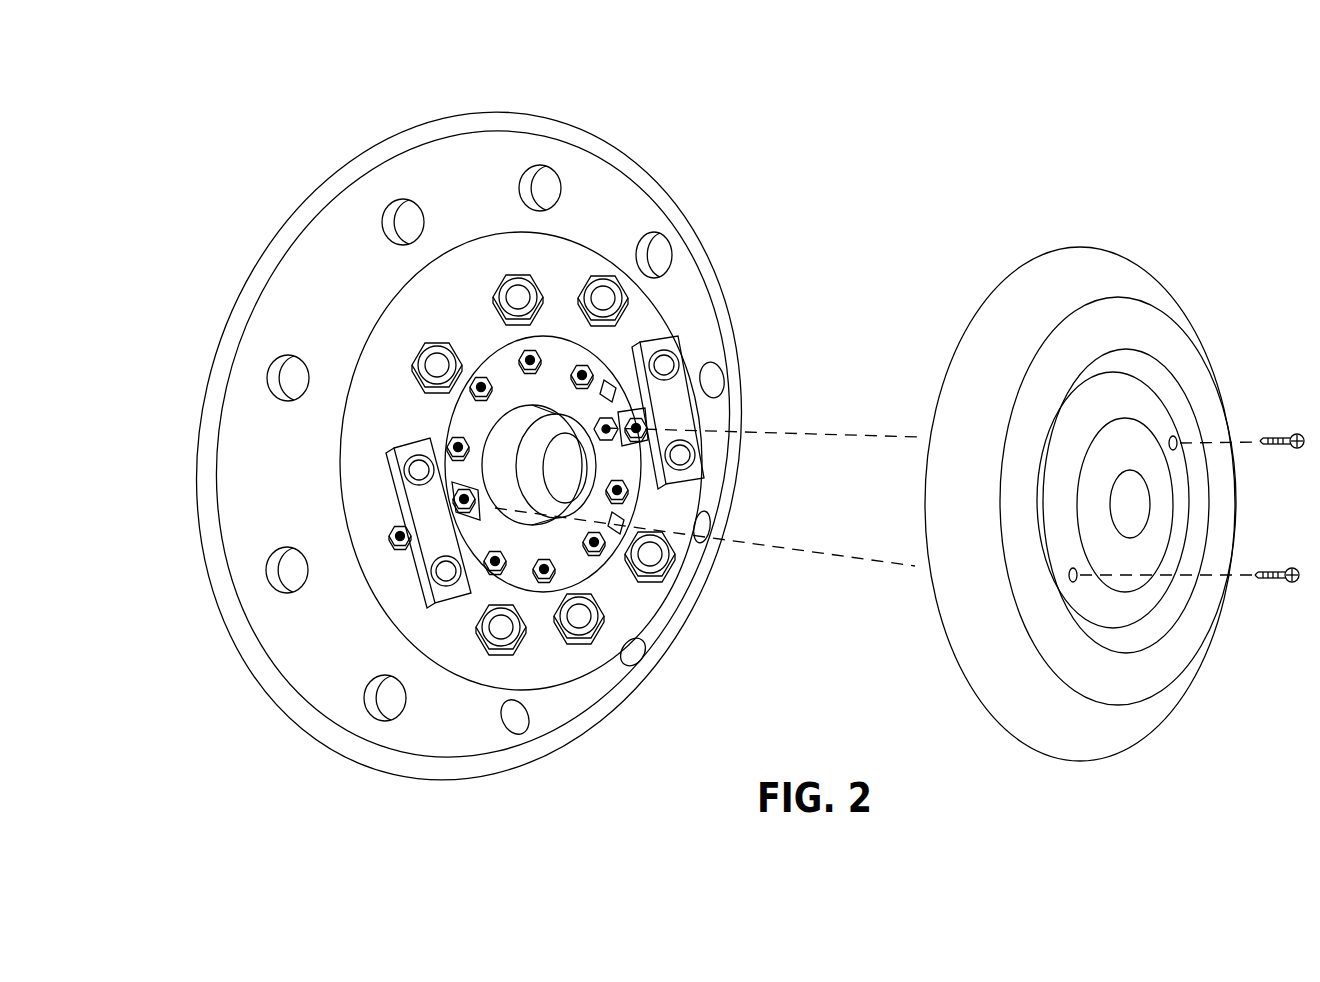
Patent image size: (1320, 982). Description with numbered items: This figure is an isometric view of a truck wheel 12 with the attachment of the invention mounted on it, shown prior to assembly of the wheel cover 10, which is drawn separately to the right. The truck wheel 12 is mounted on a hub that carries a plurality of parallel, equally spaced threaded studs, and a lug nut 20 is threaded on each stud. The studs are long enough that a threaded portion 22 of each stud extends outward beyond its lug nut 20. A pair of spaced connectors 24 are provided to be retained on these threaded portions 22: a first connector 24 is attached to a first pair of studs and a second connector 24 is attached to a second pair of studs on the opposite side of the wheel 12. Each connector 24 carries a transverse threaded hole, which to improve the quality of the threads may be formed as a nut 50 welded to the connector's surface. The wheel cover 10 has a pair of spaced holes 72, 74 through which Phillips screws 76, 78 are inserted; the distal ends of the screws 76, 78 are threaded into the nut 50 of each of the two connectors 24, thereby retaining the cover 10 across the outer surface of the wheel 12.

The wheel cover 10 is at (1024, 256).
The truck wheel 12 is at (512, 104).
The lug nut 20 is at (530, 283).
The threaded portion 22 is at (589, 630).
The connector 24 is at (691, 374).
The nut 50 is at (443, 455).
The hole 72 is at (1172, 433).
The hole 74 is at (1076, 586).
The Phillips screw 76 is at (1286, 430).
The Phillips screw 78 is at (1280, 590).